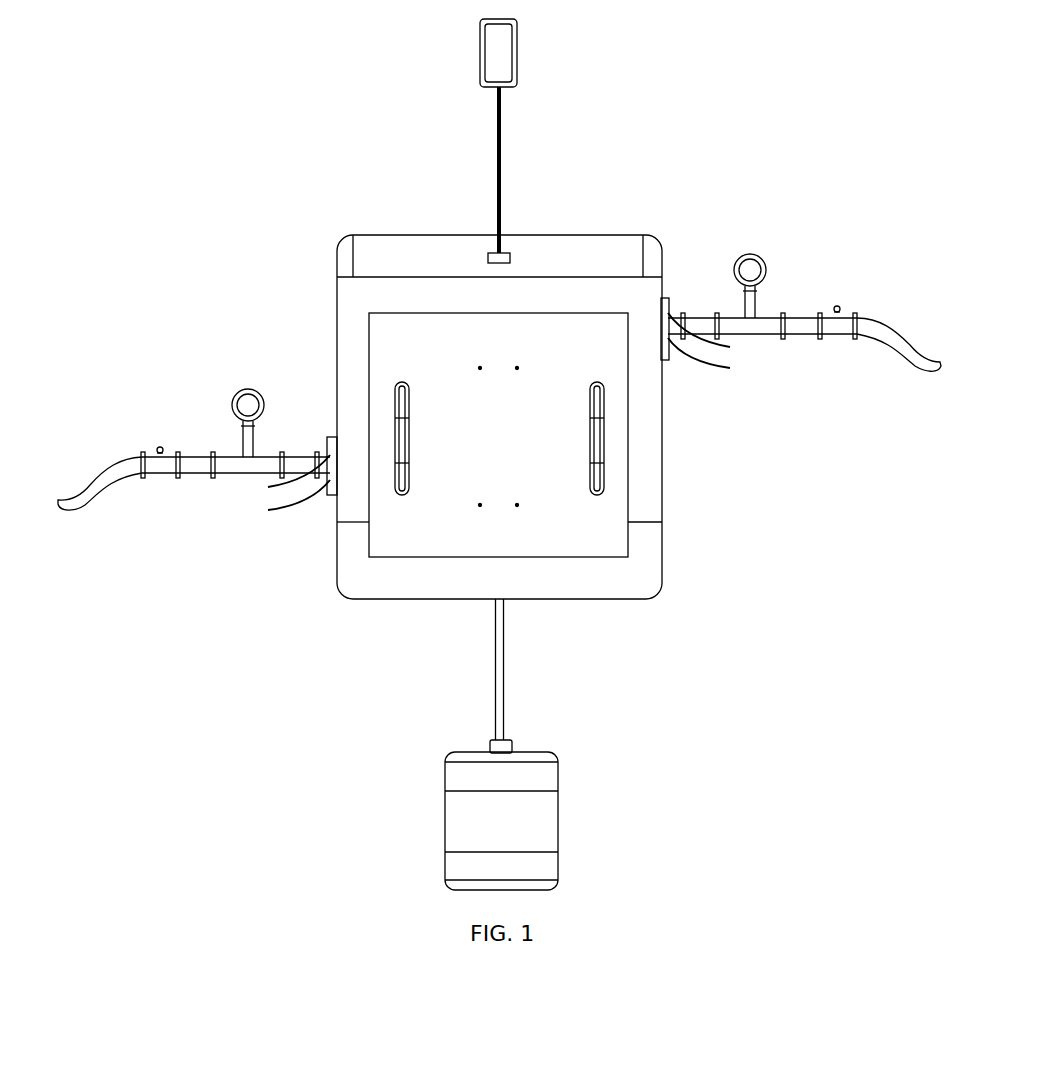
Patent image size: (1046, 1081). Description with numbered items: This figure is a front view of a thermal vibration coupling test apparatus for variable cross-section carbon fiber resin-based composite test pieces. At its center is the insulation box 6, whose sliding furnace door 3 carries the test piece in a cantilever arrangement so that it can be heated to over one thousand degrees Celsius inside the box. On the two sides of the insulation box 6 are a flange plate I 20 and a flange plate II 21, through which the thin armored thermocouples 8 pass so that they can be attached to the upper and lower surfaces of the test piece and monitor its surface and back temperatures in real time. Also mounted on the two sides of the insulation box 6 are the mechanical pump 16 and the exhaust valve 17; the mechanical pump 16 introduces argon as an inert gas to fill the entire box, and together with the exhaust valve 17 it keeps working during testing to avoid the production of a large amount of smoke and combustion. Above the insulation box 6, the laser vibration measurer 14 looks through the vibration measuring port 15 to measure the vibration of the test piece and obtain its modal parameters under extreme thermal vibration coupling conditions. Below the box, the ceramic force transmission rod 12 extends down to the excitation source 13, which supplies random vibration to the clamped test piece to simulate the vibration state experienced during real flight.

The sliding furnace door 3 is at (610, 507).
The insulation box 6 is at (636, 585).
The thin armored thermocouples 8 is at (298, 507).
The ceramic force transmission rod 12 is at (500, 703).
The excitation source 13 is at (560, 826).
The laser vibration measurer 14 is at (500, 70).
The vibration measuring port 15 is at (500, 258).
The mechanical pump 16 is at (240, 460).
The exhaust valve 17 is at (760, 333).
The flange plate I 20 is at (330, 448).
The flange plate II 21 is at (668, 300).